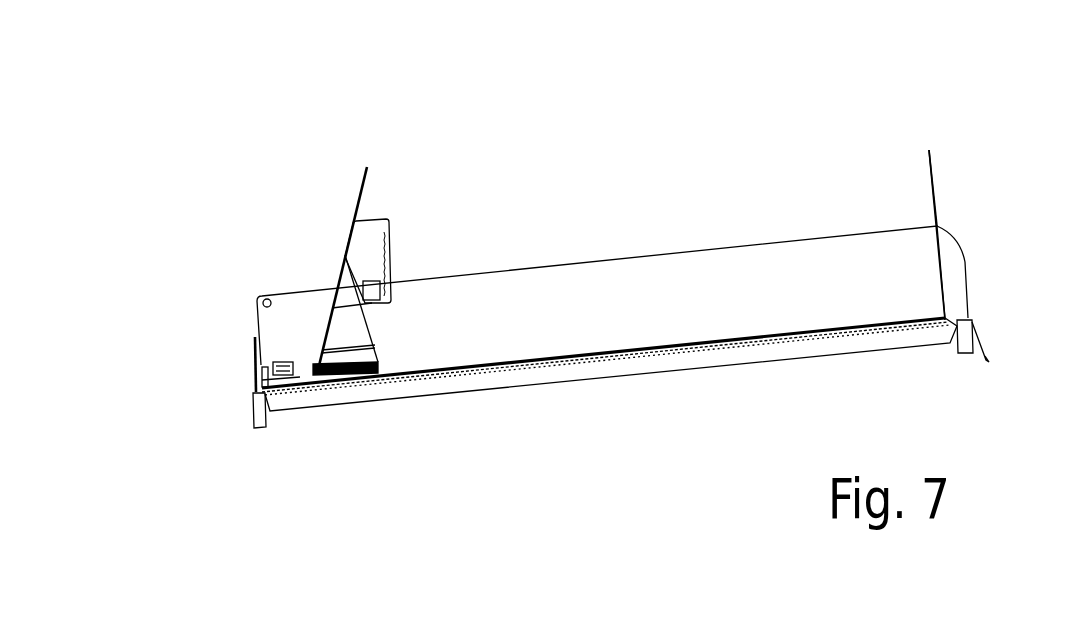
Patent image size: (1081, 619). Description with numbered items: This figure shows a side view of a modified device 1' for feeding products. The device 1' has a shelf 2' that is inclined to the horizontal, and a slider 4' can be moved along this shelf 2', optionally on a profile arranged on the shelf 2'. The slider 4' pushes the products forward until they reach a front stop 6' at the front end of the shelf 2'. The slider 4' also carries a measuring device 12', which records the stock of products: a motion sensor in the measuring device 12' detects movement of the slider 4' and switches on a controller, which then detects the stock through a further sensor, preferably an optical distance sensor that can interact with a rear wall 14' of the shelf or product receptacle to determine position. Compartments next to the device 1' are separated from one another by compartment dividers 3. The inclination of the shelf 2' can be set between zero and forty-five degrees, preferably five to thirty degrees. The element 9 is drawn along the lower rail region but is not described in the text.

The device for feeding products 1' is at (774, 169).
The shelf 2' is at (621, 427).
The compartment divider 3 is at (499, 303).
The slider 4' is at (309, 269).
The front stop 6' is at (222, 356).
The rail 9 is at (554, 355).
The measuring device 12' is at (390, 199).
The rear wall 14' is at (998, 143).